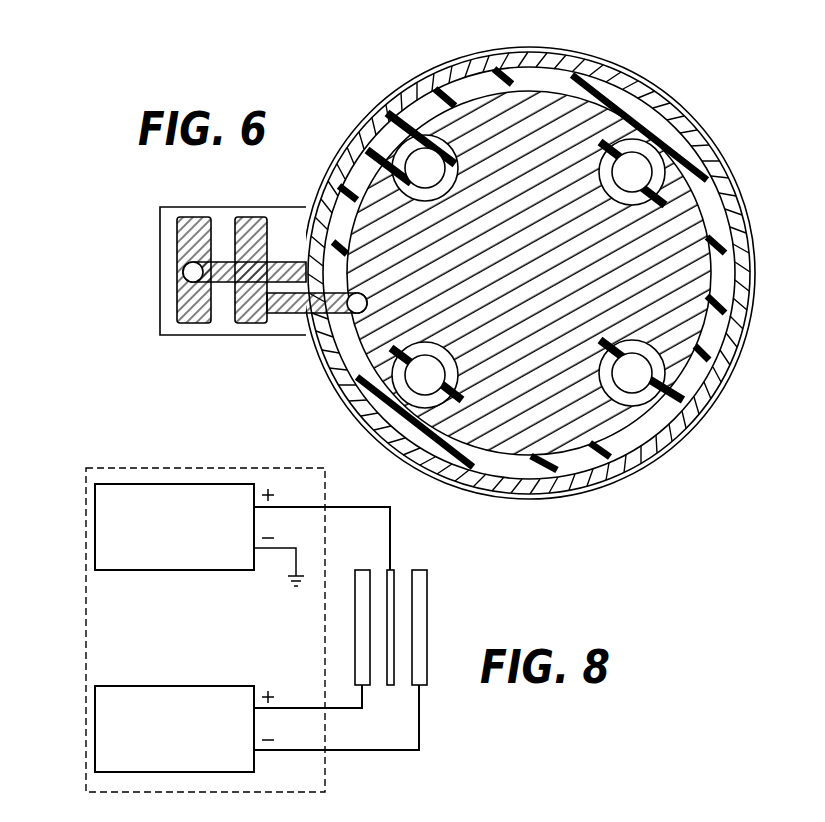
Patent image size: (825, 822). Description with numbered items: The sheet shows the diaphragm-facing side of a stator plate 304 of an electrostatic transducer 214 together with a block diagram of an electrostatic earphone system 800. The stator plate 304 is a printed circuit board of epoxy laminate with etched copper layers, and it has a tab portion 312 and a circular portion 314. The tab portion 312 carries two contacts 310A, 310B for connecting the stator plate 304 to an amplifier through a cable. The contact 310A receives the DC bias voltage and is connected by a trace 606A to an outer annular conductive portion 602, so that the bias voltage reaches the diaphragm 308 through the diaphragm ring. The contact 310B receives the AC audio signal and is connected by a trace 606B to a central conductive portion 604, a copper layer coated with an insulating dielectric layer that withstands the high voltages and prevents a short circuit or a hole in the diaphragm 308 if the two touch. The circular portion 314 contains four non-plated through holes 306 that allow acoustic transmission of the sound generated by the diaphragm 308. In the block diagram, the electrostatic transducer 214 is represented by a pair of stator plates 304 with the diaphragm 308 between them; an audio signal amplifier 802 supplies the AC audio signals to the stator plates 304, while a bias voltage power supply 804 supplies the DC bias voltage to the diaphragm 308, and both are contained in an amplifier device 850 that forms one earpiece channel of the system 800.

In FIG. 8, the electrostatic transducer 214 is at (441, 604).
In FIG. 6, the stator plate 304 is at (340, 73).
In FIG. 8, the stator plate 304 is at (360, 570).
In FIG. 6, the non-plated through holes 306 is at (424, 132).
In FIG. 8, the diaphragm 308 is at (393, 570).
In FIG. 6, the contact 310A is at (187, 222).
In FIG. 6, the contact 310B is at (250, 222).
In FIG. 6, the tab portion 312 is at (237, 270).
In FIG. 6, the circular portion 314 is at (538, 265).
In FIG. 6, the outer annular conductive portion 602 is at (652, 100).
In FIG. 6, the central conductive portion 604 is at (568, 117).
In FIG. 6, the trace 606A is at (282, 261).
In FIG. 6, the trace 606B is at (305, 316).
In FIG. 8, the electrostatic earphone system 800 is at (244, 602).
In FIG. 8, the audio signal amplifier 802 is at (133, 686).
In FIG. 8, the bias voltage power supply 804 is at (157, 571).
In FIG. 8, the amplifier device 850 is at (325, 776).